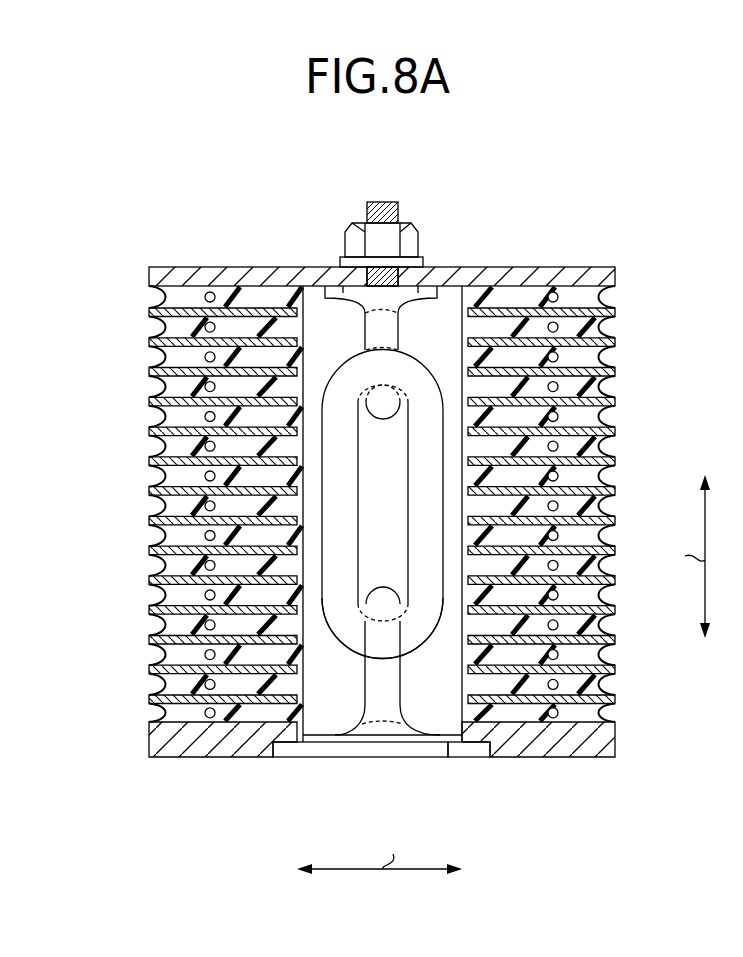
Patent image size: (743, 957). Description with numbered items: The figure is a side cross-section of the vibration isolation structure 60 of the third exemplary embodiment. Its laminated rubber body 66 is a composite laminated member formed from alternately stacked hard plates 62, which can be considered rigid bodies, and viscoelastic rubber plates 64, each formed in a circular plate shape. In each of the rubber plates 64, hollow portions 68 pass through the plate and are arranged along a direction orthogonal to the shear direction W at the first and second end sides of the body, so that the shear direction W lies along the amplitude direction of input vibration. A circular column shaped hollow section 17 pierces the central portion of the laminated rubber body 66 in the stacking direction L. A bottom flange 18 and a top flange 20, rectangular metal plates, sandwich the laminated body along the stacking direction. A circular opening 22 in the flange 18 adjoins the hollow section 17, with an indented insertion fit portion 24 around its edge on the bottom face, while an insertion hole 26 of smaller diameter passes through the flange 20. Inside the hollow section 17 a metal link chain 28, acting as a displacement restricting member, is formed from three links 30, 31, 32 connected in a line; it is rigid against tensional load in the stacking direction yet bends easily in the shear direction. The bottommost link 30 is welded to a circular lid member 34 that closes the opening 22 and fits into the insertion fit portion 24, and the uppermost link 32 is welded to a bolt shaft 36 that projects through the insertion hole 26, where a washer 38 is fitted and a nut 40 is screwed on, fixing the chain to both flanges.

The hollow section 17 is at (304, 287).
The flange 18 is at (612, 758).
The flange 20 is at (150, 268).
The opening 22 is at (455, 758).
The insertion fit portion 24 is at (288, 745).
The insertion hole 26 is at (388, 265).
The link chain 28 is at (436, 357).
The link 30 is at (365, 692).
The link 31 is at (420, 642).
The link 32 is at (378, 413).
The lid member 34 is at (370, 758).
The bolt shaft 36 is at (370, 203).
The washer 38 is at (422, 258).
The nut 40 is at (345, 224).
The vibration isolation structure 60 is at (636, 216).
The hard plates 62 is at (160, 608).
The rubber plates 64 is at (160, 346).
The laminated rubber body 66 is at (612, 503).
The hollow portions 68 is at (165, 325).